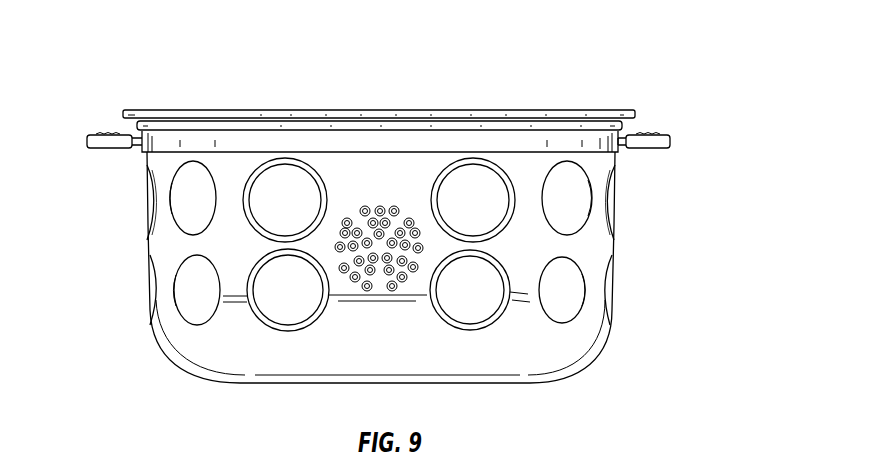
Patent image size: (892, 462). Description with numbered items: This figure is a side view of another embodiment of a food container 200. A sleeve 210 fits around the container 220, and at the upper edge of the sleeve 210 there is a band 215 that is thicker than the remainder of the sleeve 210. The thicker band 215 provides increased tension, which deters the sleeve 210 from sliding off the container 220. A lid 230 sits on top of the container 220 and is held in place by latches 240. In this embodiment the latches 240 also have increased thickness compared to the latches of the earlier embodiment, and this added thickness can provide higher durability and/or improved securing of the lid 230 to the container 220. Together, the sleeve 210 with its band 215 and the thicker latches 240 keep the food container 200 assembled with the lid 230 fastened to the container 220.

The food container 200 is at (194, 52).
The sleeve 210 is at (148, 263).
The band 215 is at (235, 137).
The container 220 is at (208, 300).
The lid 230 is at (457, 110).
The latches 240 is at (673, 146).